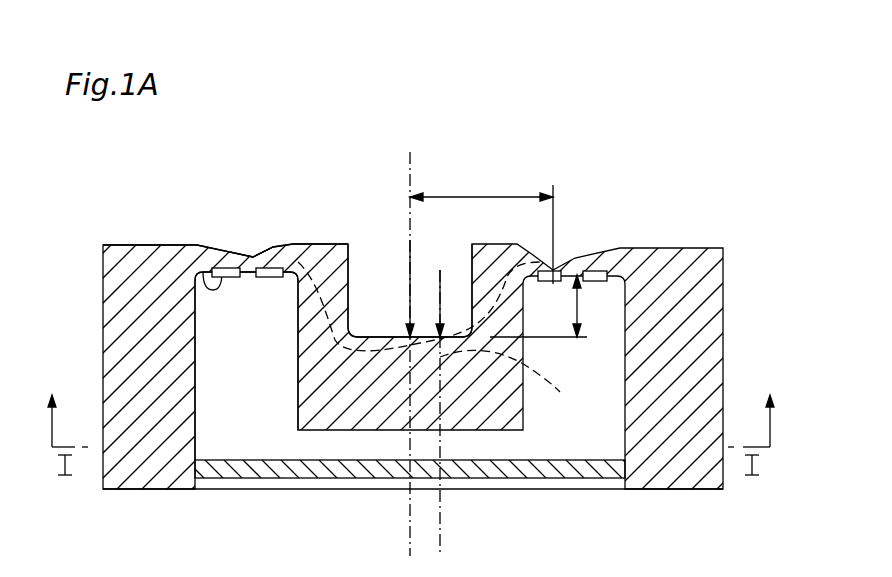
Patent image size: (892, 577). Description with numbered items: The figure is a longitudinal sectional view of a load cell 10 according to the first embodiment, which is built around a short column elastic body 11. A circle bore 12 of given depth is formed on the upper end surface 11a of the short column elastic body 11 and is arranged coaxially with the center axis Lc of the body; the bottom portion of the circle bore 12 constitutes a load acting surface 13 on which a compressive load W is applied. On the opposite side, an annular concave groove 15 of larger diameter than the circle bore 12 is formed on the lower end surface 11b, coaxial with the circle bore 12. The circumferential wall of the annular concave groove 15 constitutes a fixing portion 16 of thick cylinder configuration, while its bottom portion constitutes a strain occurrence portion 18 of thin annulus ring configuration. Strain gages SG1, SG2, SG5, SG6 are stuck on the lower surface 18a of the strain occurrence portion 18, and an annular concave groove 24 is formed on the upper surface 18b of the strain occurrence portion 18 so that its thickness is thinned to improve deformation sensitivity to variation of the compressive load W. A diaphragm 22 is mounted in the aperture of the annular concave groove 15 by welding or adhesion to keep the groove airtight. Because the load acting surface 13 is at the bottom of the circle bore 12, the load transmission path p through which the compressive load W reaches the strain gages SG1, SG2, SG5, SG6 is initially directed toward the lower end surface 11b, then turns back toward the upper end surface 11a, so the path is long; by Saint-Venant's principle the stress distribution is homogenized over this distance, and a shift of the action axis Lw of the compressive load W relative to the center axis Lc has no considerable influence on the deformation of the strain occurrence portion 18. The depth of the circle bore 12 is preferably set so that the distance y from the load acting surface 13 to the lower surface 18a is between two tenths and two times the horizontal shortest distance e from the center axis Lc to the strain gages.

The load cell 10 is at (742, 146).
The short column elastic body 11 is at (102, 262).
The upper end surface 11a is at (125, 245).
The lower end surface 11b is at (136, 489).
The circle bore 12 is at (352, 250).
The load acting surface 13 is at (380, 337).
The annular concave groove 15 is at (197, 430).
The fixing portion 16 is at (702, 311).
The strain occurrence portion 18 is at (214, 257).
The lower surface 18a is at (240, 294).
The upper surface 18b is at (287, 242).
The diaphragm 22 is at (601, 479).
The annular concave groove 24 is at (267, 250).
The strain gage SG1 is at (551, 271).
The strain gage SG2 is at (597, 270).
The strain gage SG5 is at (266, 280).
The strain gage SG6 is at (207, 272).
The compressive load W is at (408, 300).
The horizontal shortest distance e is at (481, 227).
The distance y is at (538, 306).
The load transmission path p is at (434, 335).
The center axis Lc is at (410, 172).
The action axis Lw is at (443, 503).